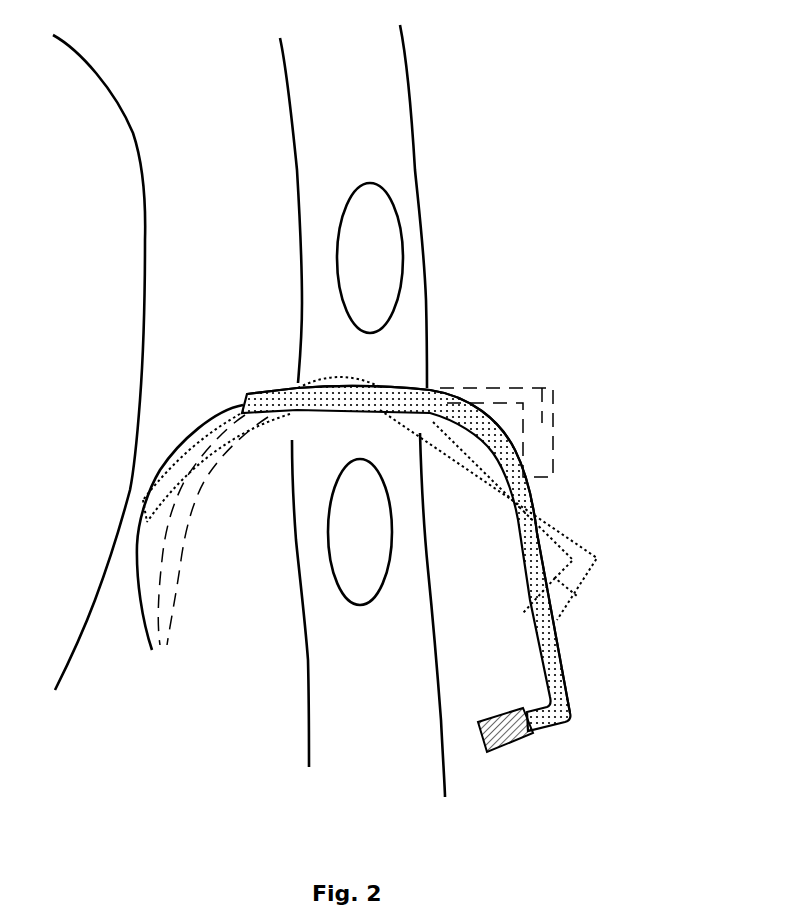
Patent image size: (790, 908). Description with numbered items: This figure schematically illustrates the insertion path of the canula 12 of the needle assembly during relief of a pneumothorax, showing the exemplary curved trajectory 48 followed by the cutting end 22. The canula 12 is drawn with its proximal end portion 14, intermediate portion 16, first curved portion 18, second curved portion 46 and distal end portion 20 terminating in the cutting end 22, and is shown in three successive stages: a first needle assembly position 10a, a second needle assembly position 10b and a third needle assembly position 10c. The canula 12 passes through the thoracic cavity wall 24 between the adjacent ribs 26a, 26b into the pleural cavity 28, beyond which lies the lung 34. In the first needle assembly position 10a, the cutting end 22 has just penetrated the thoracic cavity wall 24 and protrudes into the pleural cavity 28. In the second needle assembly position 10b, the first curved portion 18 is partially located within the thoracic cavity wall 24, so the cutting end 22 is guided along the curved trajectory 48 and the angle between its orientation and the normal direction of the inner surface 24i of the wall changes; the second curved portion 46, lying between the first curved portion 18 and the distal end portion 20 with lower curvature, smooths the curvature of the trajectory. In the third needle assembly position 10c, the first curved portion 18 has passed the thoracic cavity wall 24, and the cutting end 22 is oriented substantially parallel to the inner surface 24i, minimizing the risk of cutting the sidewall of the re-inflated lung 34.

The first needle assembly position 10a is at (447, 559).
The second needle assembly position 10b is at (600, 557).
The third needle assembly position 10c is at (547, 390).
The canula 12 is at (563, 647).
The proximal end portion 14 is at (576, 715).
The intermediate portion 16 is at (503, 531).
The first curved portion 18 is at (502, 424).
The distal end portion 20 is at (280, 384).
The cutting end 22 is at (245, 404).
The thoracic cavity wall 24 is at (427, 537).
The inner surface of the thoracic cavity wall 24i is at (292, 475).
The rib 26a is at (370, 183).
The rib 26b is at (358, 605).
The pleural cavity 28 is at (207, 124).
The lung 34 is at (145, 187).
The second curved portion 46 is at (385, 379).
The curved trajectory 48 is at (148, 656).